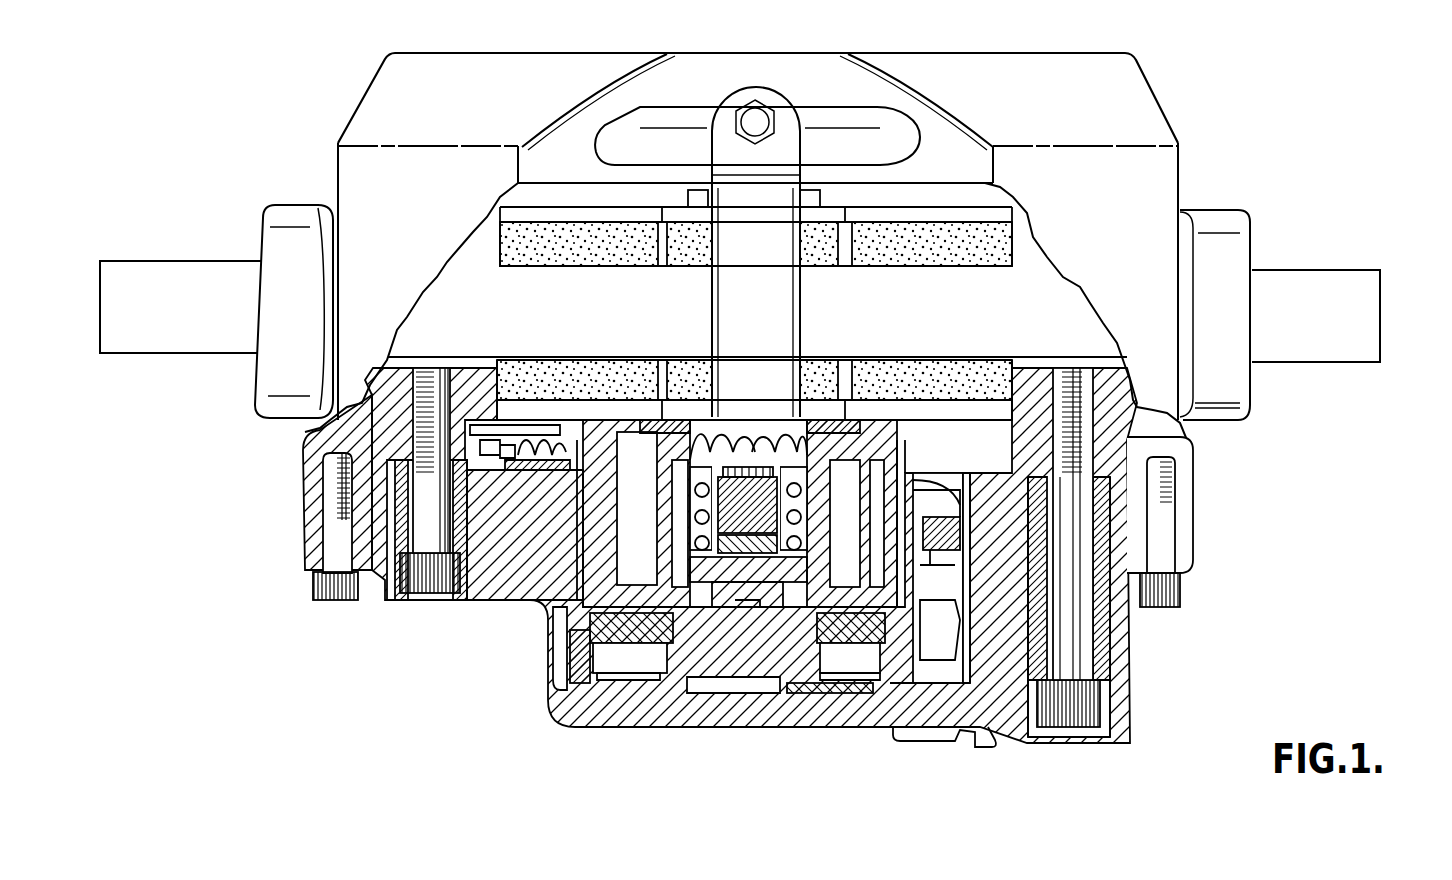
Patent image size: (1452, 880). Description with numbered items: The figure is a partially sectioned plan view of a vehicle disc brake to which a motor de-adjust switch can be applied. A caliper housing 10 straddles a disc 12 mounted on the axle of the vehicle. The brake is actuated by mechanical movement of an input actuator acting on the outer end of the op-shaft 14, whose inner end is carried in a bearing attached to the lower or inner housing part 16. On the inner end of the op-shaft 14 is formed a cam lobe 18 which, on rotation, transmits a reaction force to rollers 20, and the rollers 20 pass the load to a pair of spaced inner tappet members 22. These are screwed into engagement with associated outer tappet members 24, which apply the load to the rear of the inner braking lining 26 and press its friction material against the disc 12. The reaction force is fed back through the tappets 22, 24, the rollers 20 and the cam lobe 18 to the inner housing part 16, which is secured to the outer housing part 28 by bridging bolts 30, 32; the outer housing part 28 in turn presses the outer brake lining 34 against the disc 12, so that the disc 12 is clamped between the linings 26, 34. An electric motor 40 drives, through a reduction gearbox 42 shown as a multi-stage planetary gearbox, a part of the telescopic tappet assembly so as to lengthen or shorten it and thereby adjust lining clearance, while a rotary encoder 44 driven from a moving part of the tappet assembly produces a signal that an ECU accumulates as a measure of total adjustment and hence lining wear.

The caliper housing 10 is at (1185, 148).
The disc 12 is at (1317, 347).
The op-shaft 14 is at (717, 663).
The inner housing part 16 is at (955, 745).
The cam lobe 18 is at (830, 660).
The rollers 20 is at (627, 633).
The inner tappet members 22 is at (570, 548).
The outer tappet members 24 is at (565, 470).
The inner braking lining 26 is at (540, 378).
The outer housing part 28 is at (1153, 202).
The bridging bolt 30 is at (1000, 565).
The bridging bolt 32 is at (330, 543).
The outer brake lining 34 is at (505, 244).
The electric motor 40 is at (740, 490).
The reduction gearbox 42 is at (747, 607).
The rotary encoder 44 is at (1040, 520).